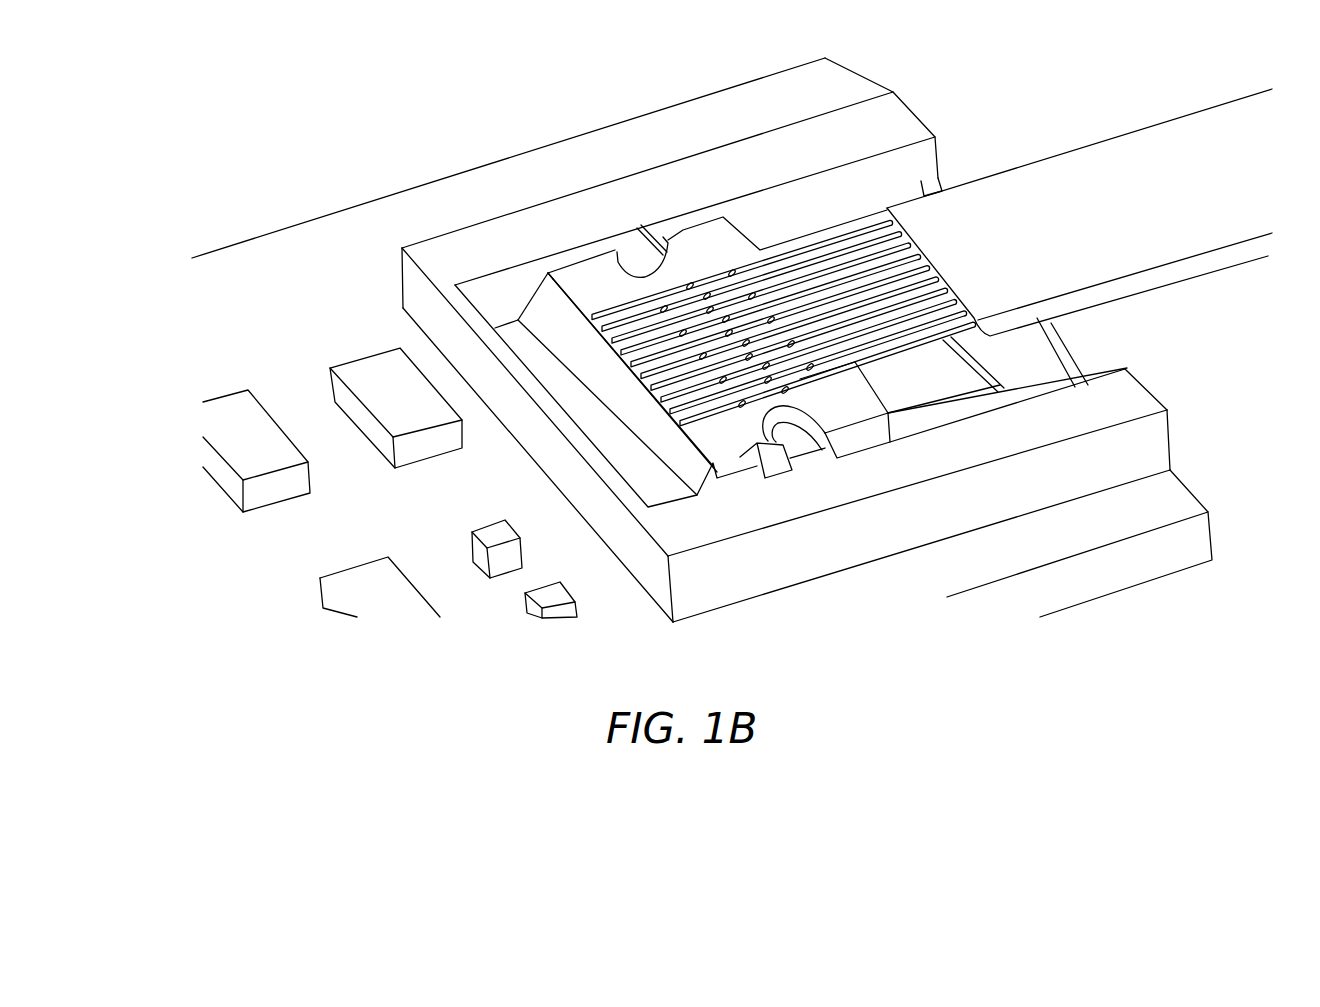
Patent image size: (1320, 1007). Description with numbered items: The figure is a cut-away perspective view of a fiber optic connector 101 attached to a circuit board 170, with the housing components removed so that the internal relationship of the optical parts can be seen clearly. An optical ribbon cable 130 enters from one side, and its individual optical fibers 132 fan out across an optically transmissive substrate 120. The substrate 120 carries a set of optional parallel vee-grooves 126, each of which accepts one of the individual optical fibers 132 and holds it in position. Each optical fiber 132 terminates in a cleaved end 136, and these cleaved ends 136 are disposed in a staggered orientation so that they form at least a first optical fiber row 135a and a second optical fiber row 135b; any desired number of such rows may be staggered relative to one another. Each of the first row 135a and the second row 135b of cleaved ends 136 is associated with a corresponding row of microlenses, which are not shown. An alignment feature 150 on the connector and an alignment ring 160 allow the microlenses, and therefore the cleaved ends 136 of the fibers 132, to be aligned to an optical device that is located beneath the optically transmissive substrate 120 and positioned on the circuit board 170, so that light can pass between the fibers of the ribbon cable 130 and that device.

The fiber optic connector 101 is at (326, 78).
The circuit board 170 is at (290, 255).
The alignment feature 150 is at (630, 222).
The optically transmissive substrate 120 is at (713, 433).
The parallel vee-grooves 126 is at (602, 308).
The individual optical fibers 132 is at (787, 258).
The cleaved end 136 is at (691, 283).
The optical ribbon cable 130 is at (1075, 175).
The alignment ring 160 is at (1127, 397).
The first optical fiber row 135a is at (746, 425).
The second optical fiber row 135b is at (783, 412).